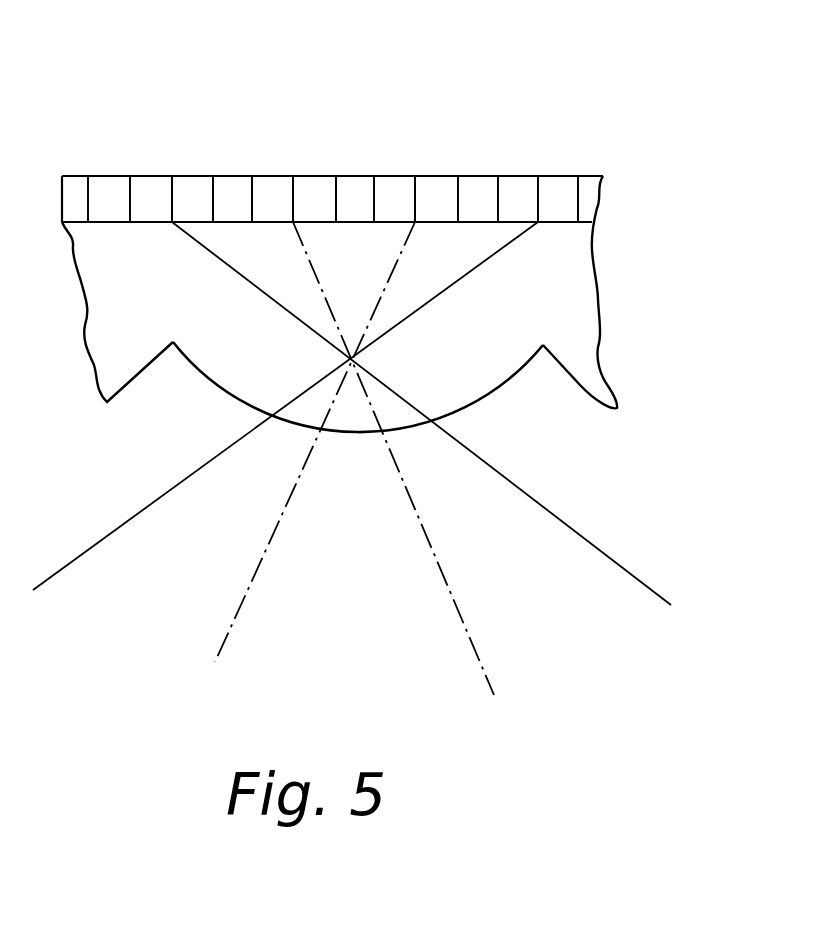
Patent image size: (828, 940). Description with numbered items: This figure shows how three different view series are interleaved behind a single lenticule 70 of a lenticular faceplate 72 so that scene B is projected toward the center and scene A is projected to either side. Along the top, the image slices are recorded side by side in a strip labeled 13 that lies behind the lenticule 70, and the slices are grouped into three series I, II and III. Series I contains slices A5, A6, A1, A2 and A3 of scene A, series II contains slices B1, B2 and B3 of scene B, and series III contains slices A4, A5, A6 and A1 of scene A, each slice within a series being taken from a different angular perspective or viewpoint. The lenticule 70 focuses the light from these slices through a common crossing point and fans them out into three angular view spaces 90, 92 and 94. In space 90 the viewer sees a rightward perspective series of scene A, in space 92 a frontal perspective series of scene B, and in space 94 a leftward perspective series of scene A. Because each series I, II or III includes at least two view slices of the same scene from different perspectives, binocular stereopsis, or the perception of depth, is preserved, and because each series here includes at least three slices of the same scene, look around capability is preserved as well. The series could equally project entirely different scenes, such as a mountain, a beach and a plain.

The detector array strip 13 is at (600, 203).
The lenticular faceplate 72 is at (600, 347).
The lenticule 70 is at (502, 390).
The angular view space 90 is at (237, 613).
The angular view space 92 is at (470, 647).
The angular view space 94 is at (483, 662).
The first slice of scene A A1 is at (185, 191).
The second slice of scene A A2 is at (230, 191).
The third slice of scene A A3 is at (273, 191).
The fourth slice of scene A A4 is at (433, 191).
The detector element A5 is at (100, 191).
The detector element A6 is at (150, 191).
The first slice of scene B B1 is at (312, 191).
The second slice of scene B B2 is at (352, 191).
The third slice of scene B B3 is at (390, 191).
The view series I is at (168, 143).
The view series II is at (408, 92).
The view series III is at (543, 148).